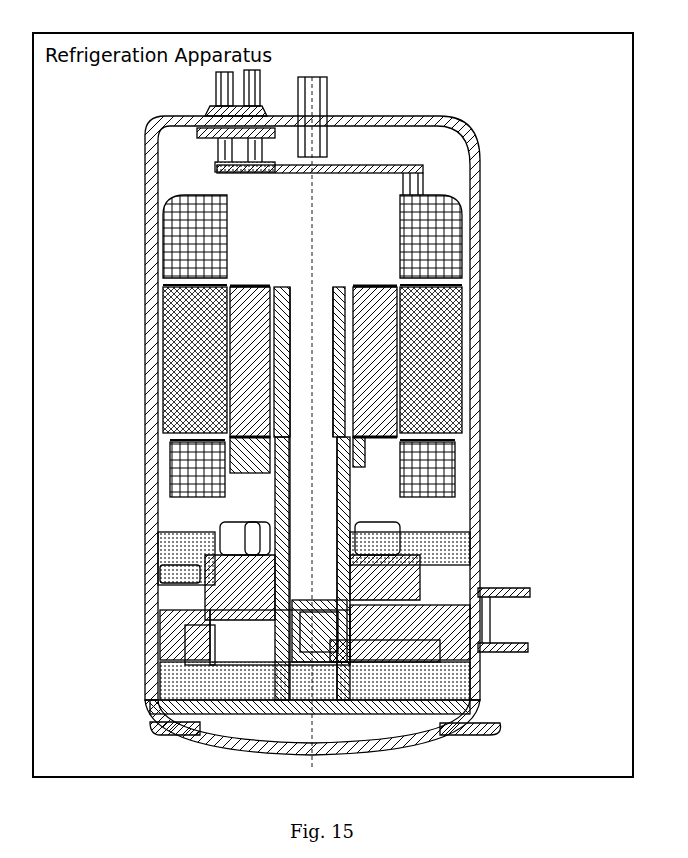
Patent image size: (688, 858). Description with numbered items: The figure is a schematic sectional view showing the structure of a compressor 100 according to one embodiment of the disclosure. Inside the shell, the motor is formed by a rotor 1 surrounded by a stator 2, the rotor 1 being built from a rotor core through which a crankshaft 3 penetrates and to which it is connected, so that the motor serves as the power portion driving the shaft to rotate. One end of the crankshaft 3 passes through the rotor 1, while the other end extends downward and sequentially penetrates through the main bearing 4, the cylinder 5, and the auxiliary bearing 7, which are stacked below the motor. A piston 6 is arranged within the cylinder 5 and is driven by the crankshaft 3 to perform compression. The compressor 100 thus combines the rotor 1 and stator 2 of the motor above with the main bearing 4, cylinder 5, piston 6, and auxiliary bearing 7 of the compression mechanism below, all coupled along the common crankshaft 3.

The compressor 100 is at (503, 102).
The rotor 1 is at (458, 312).
The stator 2 is at (440, 365).
The crankshaft 3 is at (322, 488).
The main bearing 4 is at (450, 552).
The cylinder 5 is at (245, 624).
The piston 6 is at (325, 612).
The auxiliary bearing 7 is at (150, 686).